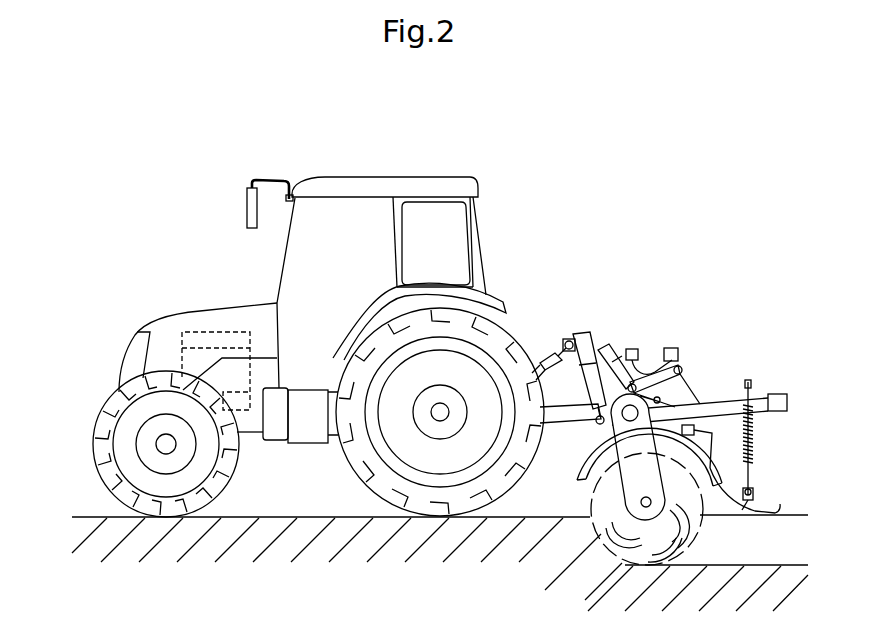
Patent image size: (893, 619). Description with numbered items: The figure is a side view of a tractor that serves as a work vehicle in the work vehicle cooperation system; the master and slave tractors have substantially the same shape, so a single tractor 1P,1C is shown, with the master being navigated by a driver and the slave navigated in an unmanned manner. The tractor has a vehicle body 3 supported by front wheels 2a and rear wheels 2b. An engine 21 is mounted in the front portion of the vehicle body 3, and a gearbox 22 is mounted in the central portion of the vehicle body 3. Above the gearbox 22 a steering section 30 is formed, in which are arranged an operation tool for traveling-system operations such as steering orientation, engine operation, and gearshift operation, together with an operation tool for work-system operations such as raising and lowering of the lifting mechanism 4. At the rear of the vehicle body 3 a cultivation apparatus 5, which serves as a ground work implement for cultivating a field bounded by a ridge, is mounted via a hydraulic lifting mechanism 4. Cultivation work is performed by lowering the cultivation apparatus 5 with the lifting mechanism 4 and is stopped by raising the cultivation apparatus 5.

The master tractor and slave tractor 1P,1C is at (410, 165).
The steering section 30 is at (336, 230).
The vehicle body 3 is at (212, 287).
The engine 21 is at (250, 345).
The gearbox 22 is at (310, 432).
The front wheels 2a is at (96, 480).
The rear wheels 2b is at (510, 483).
The hydraulic lifting mechanism 4 is at (568, 319).
The cultivation apparatus 5 is at (710, 369).